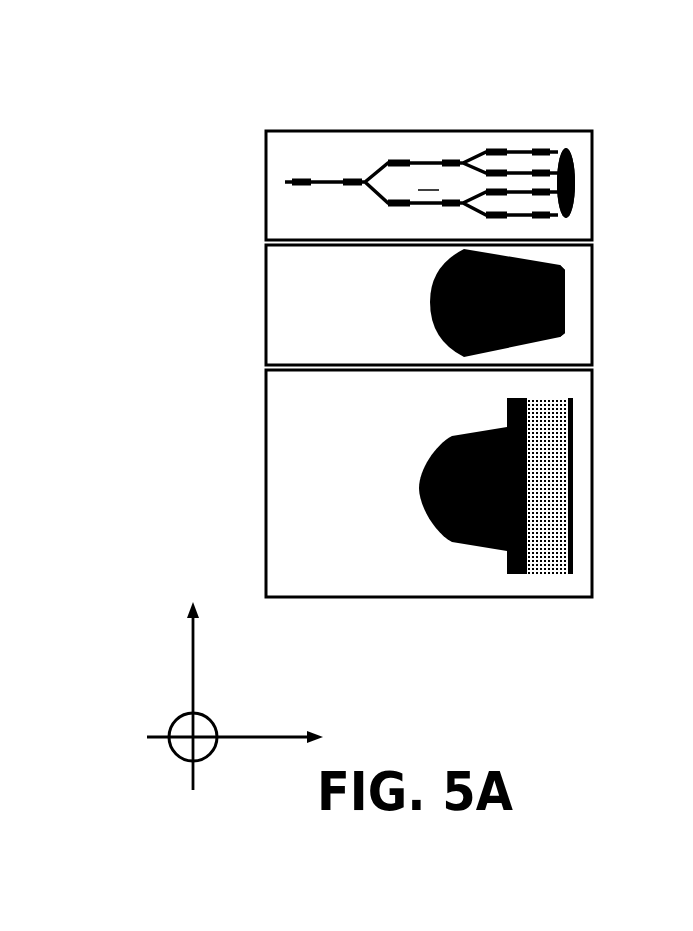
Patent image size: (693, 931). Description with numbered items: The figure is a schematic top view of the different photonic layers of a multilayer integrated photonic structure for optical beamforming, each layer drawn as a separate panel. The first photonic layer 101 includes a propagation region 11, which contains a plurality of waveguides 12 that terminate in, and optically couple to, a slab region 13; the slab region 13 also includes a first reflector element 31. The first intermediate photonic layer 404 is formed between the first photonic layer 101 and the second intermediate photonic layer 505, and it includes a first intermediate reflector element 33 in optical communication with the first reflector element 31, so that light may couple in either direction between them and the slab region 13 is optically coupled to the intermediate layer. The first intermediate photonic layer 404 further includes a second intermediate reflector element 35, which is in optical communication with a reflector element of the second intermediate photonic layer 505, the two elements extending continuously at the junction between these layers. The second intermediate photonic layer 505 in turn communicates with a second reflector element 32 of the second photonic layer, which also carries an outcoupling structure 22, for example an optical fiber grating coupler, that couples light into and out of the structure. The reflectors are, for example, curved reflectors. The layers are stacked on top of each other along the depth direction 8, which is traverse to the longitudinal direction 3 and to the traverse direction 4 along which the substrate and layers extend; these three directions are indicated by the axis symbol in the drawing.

The first photonic layer 101 is at (266, 222).
The propagation region 11 is at (417, 145).
The plurality of waveguides 12 is at (429, 179).
The slab region 13 is at (550, 135).
The first reflector element 31 is at (591, 178).
The first intermediate photonic layer 404 is at (266, 341).
The first intermediate reflector element 33 is at (415, 303).
The second intermediate reflector element 35 is at (581, 295).
The second intermediate photonic layer 505 is at (266, 557).
The second reflector element 32 is at (407, 472).
The outcoupling structure 22 is at (563, 482).
The traverse direction 4 is at (193, 632).
The longitudinal direction 3 is at (281, 737).
The depth direction 8 is at (160, 714).